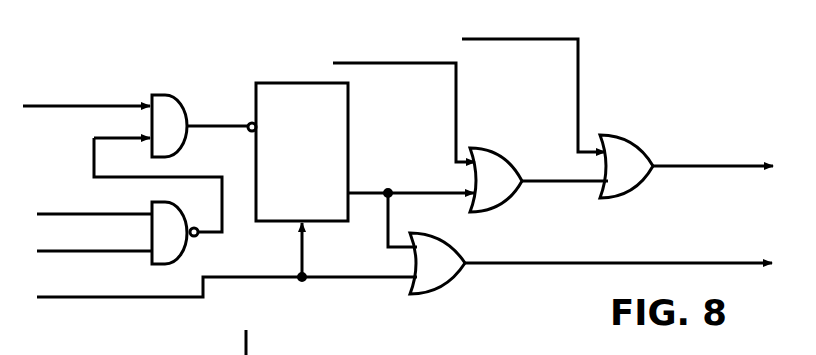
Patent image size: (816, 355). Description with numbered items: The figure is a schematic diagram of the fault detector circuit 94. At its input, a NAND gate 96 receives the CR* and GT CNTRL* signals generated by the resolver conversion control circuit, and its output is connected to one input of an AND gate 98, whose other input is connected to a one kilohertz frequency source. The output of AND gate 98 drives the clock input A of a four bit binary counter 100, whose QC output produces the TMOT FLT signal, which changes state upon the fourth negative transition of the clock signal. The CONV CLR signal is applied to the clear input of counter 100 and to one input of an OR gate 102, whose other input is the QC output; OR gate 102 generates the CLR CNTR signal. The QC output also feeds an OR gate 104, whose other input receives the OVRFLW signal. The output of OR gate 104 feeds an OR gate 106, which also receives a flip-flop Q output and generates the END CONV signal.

The fault detector circuit 94 is at (234, 65).
The NAND gate 96 is at (169, 233).
The AND gate 98 is at (169, 126).
The 4 bit binary counter 100 is at (302, 152).
The OR gate 102 is at (437, 263).
The OR gate 104 is at (496, 180).
The OR gate 106 is at (626, 166).